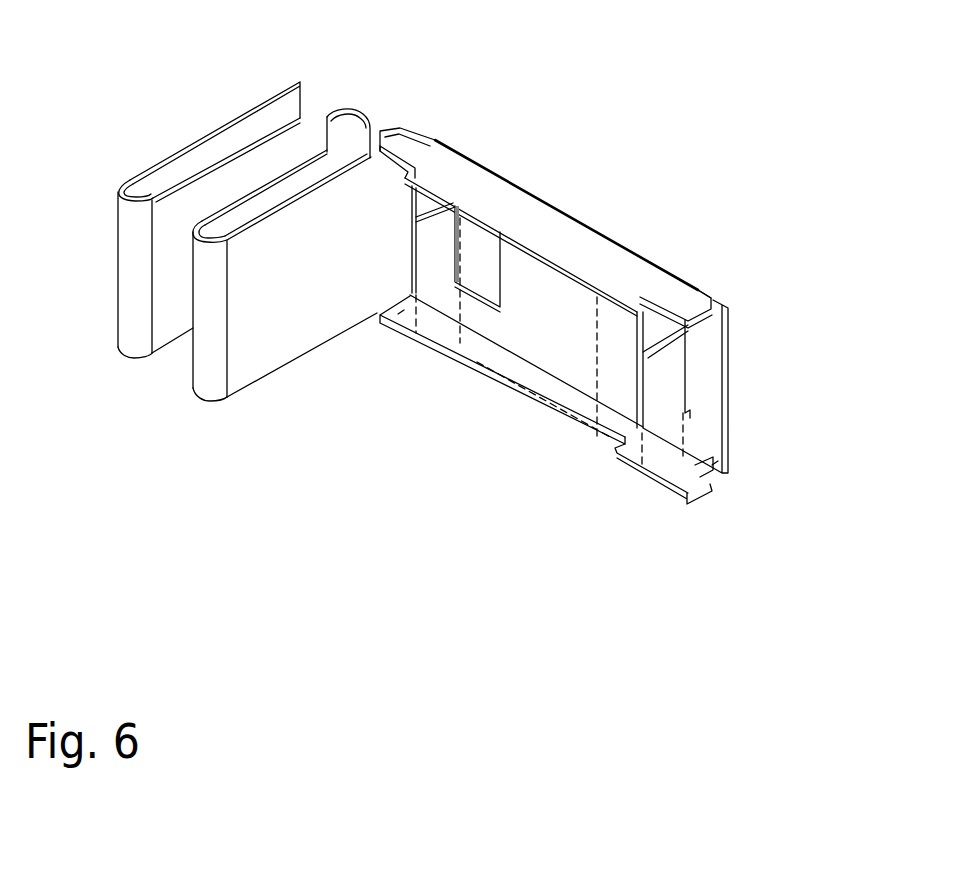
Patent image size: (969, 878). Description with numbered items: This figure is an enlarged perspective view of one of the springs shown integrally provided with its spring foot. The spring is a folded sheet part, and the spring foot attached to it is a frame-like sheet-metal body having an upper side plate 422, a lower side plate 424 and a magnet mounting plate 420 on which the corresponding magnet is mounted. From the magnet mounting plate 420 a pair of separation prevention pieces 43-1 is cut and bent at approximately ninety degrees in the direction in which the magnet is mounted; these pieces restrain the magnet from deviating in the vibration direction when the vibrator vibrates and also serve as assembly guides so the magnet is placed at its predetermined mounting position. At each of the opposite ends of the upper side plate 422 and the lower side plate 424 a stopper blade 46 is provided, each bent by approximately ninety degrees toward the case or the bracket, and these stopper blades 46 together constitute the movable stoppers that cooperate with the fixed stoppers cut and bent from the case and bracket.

The upper side plate 422 is at (482, 186).
The magnet mounting plate 420 is at (538, 340).
The lower side plate 424 is at (473, 357).
The separation prevention pieces 43-1 is at (440, 260).
The stopper blades 46 is at (409, 152).